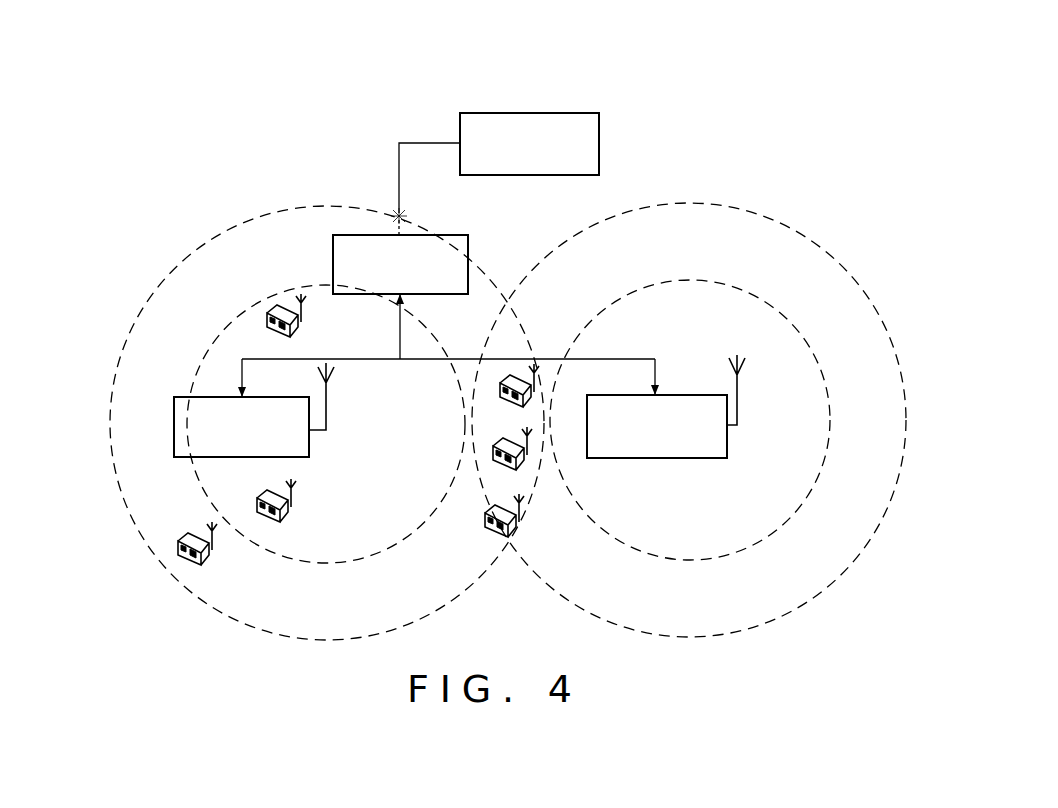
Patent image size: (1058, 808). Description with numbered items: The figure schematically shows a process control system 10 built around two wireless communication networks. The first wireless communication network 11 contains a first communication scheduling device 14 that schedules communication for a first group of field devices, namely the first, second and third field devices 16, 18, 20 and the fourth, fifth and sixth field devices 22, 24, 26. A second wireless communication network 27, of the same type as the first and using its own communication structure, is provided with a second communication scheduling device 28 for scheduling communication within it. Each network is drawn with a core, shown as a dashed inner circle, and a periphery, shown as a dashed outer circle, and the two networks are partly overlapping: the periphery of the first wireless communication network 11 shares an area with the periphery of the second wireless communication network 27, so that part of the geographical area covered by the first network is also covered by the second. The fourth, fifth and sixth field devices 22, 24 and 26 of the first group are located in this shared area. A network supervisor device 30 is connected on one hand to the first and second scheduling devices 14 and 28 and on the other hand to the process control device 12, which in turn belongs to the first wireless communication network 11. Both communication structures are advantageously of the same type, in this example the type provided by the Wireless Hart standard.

The process control system 10 is at (252, 168).
The first wireless communication network 11 is at (213, 235).
The process control device 12 is at (552, 161).
The first communication scheduling device 14 is at (262, 441).
The first field device 16 is at (219, 564).
The second field device 18 is at (300, 504).
The third field device 20 is at (309, 320).
The fourth field device 22 is at (514, 365).
The fifth field device 24 is at (505, 434).
The sixth field device 26 is at (491, 529).
The second wireless communication network 27 is at (670, 203).
The second communication scheduling device 28 is at (679, 441).
The network supervisor device 30 is at (422, 281).